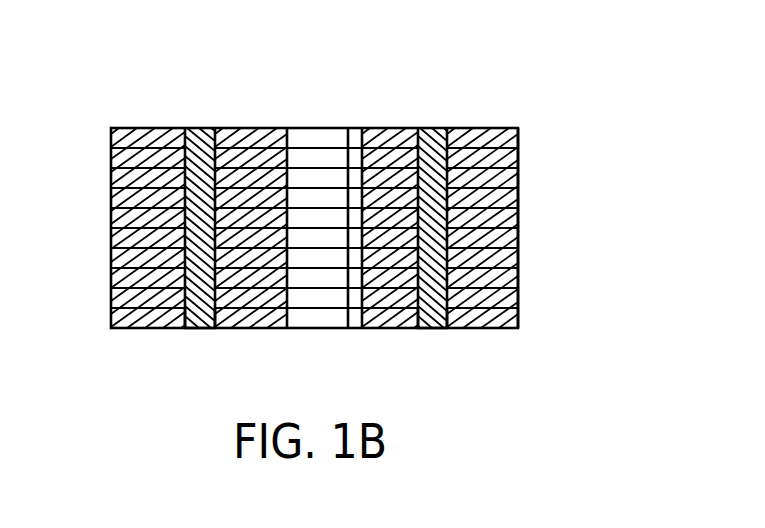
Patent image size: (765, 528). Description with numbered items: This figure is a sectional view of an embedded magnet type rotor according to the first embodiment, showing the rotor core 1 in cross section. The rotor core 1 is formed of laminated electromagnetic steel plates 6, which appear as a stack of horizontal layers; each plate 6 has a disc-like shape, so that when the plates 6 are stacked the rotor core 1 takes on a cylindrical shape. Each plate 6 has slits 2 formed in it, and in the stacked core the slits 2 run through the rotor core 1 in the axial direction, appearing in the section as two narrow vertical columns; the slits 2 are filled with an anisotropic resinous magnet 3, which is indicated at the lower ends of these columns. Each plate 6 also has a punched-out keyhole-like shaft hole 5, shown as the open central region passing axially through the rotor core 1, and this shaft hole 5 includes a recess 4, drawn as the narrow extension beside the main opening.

The rotor core 1 is at (487, 127).
The slits 2 is at (197, 127).
The anisotropic resinous magnet 3 is at (200, 320).
The recess 4 is at (335, 127).
The shaft hole 5 is at (305, 127).
The electromagnetic steel plates 6 is at (518, 173).